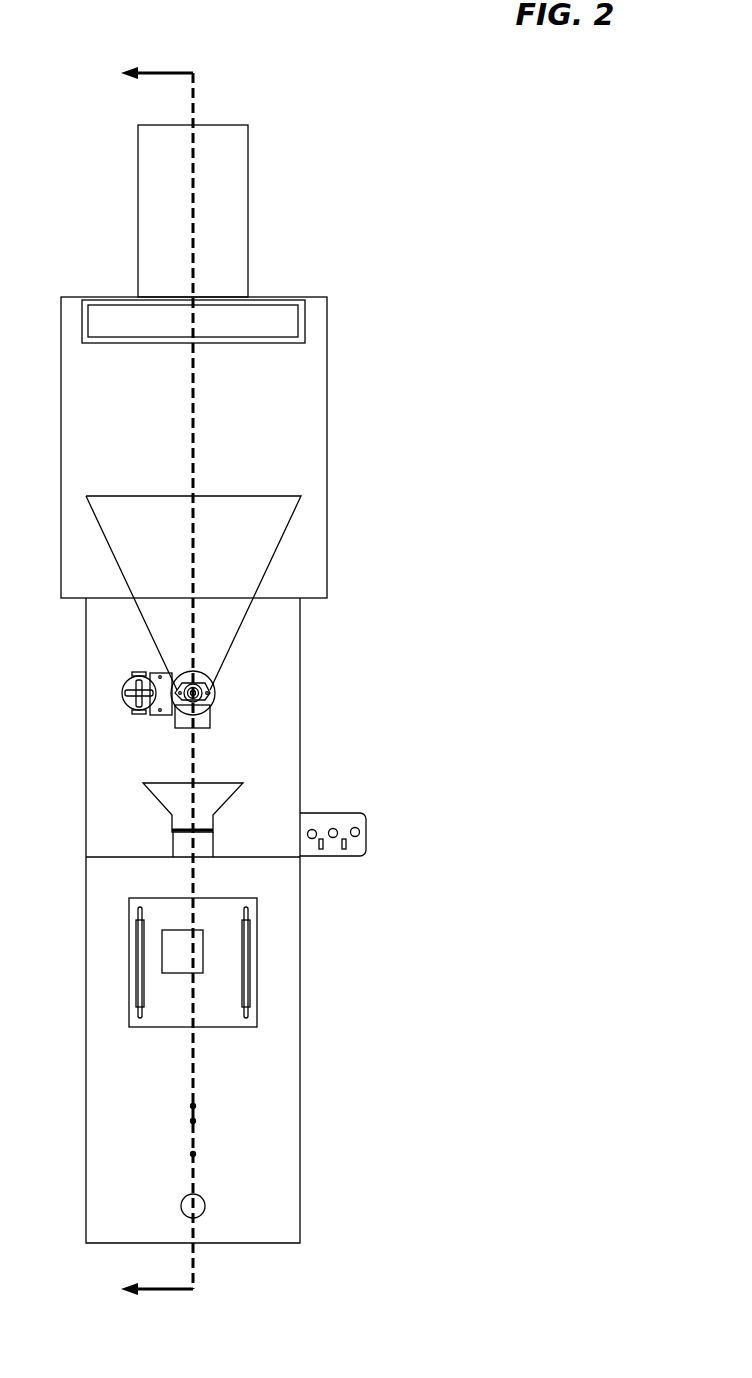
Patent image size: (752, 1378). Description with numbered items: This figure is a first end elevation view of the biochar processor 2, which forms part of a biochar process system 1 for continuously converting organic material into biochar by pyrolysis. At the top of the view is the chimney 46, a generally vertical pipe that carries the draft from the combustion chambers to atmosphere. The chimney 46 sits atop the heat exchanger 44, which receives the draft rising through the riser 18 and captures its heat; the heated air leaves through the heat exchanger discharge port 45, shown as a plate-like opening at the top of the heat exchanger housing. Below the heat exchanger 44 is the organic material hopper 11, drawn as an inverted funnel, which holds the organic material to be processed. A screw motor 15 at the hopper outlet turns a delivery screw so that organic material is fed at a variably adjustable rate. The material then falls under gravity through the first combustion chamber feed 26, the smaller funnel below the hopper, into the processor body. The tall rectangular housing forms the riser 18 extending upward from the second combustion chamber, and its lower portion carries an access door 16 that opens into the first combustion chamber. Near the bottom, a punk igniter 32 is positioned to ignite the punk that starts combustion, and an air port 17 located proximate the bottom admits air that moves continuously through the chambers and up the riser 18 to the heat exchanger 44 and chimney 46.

The biochar process system 1 is at (485, 197).
The biochar processor 2 is at (331, 636).
The organic material hopper 11 is at (248, 538).
The screw motor 15 is at (130, 674).
The access door 16 is at (129, 992).
The air port 17 is at (205, 1206).
The riser 18 is at (302, 755).
The first combustion chamber feed 26 is at (167, 797).
The punk igniter 32 is at (193, 1154).
The heat exchanger 44 is at (278, 385).
The heat exchanger discharge port 45 is at (277, 298).
The chimney 46 is at (208, 163).